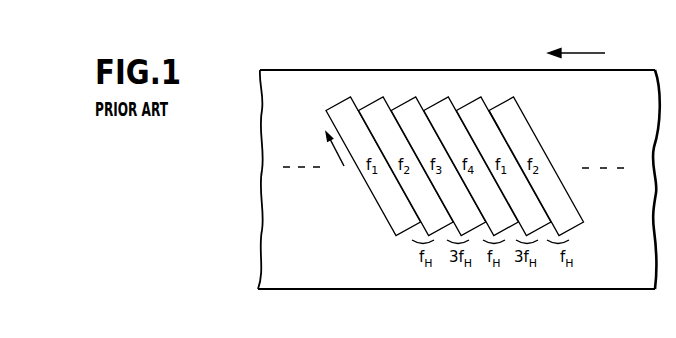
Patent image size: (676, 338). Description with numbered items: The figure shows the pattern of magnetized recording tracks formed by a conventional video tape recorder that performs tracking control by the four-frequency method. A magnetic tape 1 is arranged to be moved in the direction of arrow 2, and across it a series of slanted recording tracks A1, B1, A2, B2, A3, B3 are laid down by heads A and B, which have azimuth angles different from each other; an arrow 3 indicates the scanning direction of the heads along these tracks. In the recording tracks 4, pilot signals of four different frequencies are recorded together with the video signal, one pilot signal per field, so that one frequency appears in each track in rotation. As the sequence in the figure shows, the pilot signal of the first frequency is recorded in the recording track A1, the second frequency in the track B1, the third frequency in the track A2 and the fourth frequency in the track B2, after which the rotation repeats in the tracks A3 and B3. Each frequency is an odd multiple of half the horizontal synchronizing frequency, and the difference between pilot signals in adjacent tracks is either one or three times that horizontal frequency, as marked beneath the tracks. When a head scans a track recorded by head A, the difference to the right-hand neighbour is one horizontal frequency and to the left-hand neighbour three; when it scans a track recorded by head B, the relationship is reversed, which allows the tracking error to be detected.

The magnetic tape 1 is at (626, 79).
The arrow 2 is at (576, 52).
The arrow 3 is at (344, 166).
The recording tracks 4 is at (493, 110).
The recording track A1 is at (342, 109).
The recording track B1 is at (373, 109).
The recording track A2 is at (409, 109).
The recording track B2 is at (443, 109).
The recording track A3 is at (475, 111).
The recording track B3 is at (507, 111).